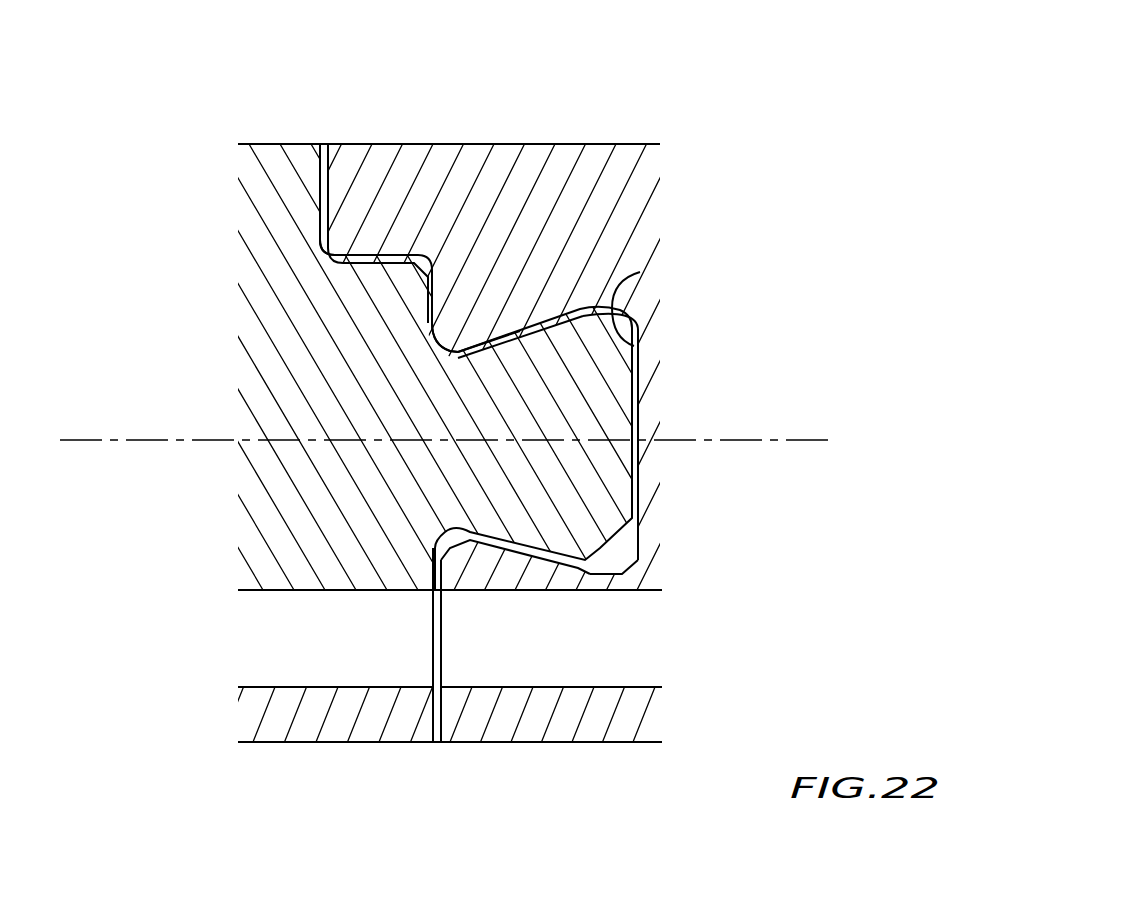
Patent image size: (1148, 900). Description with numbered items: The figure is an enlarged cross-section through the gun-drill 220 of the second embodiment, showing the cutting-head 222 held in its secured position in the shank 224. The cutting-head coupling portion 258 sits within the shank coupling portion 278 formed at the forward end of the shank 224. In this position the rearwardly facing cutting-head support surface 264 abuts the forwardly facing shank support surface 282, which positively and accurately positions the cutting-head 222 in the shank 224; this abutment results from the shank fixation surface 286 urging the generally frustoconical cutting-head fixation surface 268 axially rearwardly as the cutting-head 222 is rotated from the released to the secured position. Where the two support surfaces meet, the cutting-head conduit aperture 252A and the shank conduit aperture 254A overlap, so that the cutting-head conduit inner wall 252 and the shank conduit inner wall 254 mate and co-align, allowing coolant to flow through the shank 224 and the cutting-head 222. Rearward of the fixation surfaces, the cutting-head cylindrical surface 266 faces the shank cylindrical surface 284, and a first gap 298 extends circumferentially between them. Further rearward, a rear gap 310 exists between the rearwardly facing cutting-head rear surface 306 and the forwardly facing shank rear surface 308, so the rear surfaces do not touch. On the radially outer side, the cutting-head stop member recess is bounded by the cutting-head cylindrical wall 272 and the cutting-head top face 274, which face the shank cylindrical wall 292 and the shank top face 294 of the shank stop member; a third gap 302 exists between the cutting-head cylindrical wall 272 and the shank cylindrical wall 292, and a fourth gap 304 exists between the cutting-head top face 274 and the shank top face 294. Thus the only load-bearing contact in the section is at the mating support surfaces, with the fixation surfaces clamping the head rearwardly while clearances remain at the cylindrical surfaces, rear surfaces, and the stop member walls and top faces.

The gun-drill 220 is at (732, 129).
The cutting-head 222 is at (238, 128).
The shank 224 is at (491, 126).
The cutting-head conduit inner wall 252 is at (317, 667).
The shank conduit inner wall 254 is at (575, 670).
The cutting-head conduit aperture 252A is at (442, 648).
The shank conduit aperture 254A is at (432, 622).
The cutting-head coupling portion 258 is at (574, 464).
The cutting-head support surface 264 is at (445, 144).
The cutting-head cylindrical surface 266 is at (578, 580).
The cutting-head fixation surface 268 is at (528, 333).
The cutting-head cylindrical wall 272 is at (345, 250).
The cutting-head top face 274 is at (357, 144).
The shank coupling portion 278 is at (597, 238).
The shank support surface 282 is at (403, 144).
The shank cylindrical surface 284 is at (620, 572).
The shank fixation surface 286 is at (545, 304).
The shank cylindrical wall 292 is at (426, 325).
The shank top face 294 is at (270, 143).
The first gap 298 is at (600, 578).
The third gap 302 is at (375, 268).
The fourth gap 304 is at (323, 144).
The cutting-head rear surface 306 is at (634, 382).
The shank rear surface 308 is at (645, 272).
The rear gap 310 is at (640, 422).